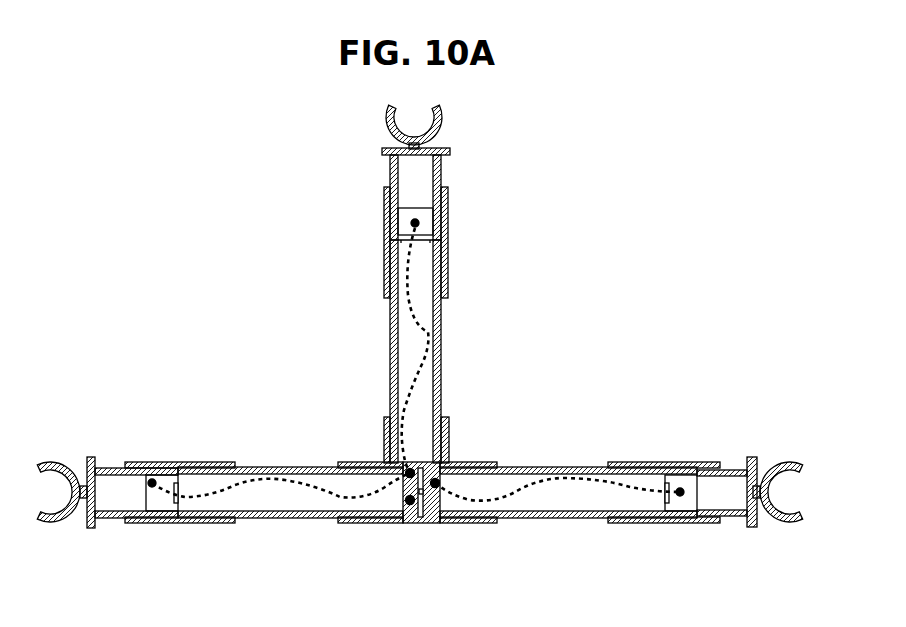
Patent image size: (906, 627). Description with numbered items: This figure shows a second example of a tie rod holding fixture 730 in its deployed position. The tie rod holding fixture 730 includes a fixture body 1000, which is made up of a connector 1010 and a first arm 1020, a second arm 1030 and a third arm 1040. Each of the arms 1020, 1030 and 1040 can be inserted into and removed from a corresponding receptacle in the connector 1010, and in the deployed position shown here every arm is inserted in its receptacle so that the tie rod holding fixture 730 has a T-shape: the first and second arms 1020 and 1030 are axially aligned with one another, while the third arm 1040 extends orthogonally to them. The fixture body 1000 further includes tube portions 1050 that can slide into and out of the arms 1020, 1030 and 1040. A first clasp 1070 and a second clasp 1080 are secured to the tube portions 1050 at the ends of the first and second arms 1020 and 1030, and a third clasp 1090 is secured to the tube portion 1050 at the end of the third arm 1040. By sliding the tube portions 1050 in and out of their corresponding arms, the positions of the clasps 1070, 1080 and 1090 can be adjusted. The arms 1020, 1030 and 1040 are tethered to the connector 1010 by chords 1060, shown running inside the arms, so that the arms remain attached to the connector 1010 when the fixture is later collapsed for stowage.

The tie rod holding fixture 730 is at (604, 228).
The fixture body 1000 is at (381, 442).
The connector 1010 is at (393, 523).
The first arm 1020 is at (280, 520).
The second arm 1030 is at (568, 520).
The third arm 1040 is at (441, 318).
The tube portion 1050 is at (441, 170).
The chord 1060 is at (423, 362).
The first clasp 1070 is at (783, 462).
The second clasp 1080 is at (58, 462).
The third clasp 1090 is at (440, 117).